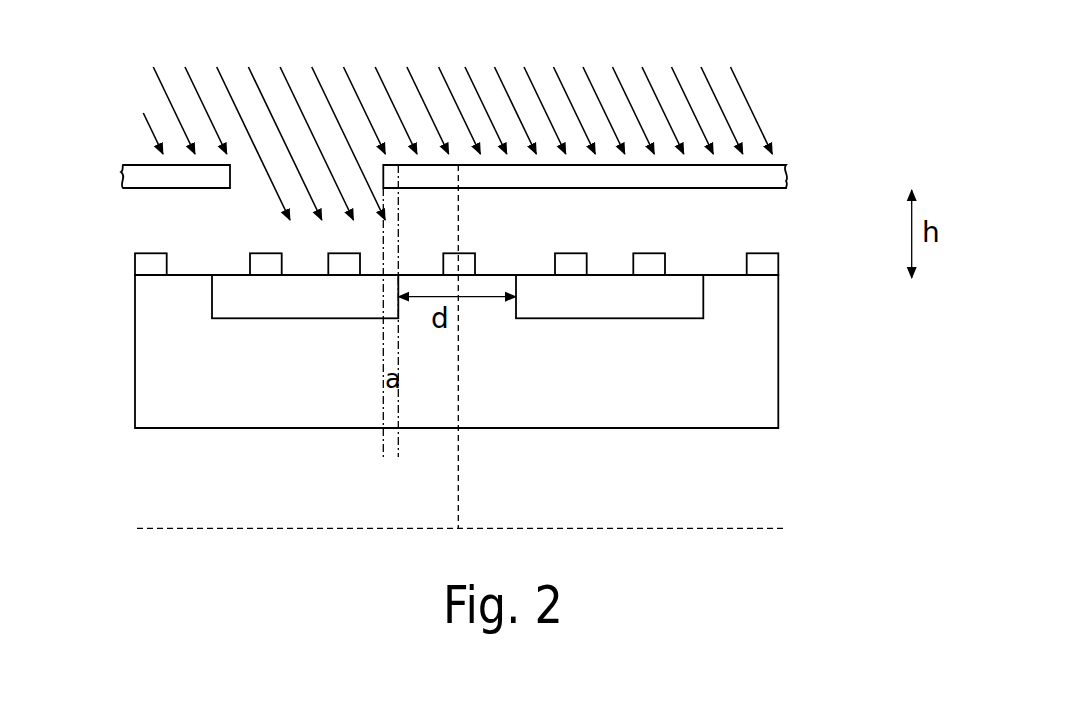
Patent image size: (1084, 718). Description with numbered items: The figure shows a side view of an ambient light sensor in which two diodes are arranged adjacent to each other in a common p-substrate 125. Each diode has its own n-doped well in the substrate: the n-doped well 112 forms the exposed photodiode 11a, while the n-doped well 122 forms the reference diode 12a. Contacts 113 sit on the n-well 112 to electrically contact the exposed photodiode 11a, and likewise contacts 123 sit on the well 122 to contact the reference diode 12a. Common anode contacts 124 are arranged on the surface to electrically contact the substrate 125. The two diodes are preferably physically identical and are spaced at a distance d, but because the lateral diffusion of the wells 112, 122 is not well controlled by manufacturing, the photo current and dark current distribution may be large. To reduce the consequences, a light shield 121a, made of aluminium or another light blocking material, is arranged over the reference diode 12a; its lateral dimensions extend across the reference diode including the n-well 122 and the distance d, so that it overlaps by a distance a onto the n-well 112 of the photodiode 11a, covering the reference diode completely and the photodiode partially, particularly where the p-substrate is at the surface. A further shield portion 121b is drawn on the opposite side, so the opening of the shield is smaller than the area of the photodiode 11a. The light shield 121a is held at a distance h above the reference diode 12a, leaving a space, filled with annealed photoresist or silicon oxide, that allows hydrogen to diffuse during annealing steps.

The exposed photodiode 11a is at (218, 333).
The reference diode 12a is at (702, 345).
The n-doped well 112 is at (302, 318).
The contacts 113 is at (263, 253).
The light shield 121a is at (780, 165).
The light shield portion 121b is at (130, 165).
The n-doped well 122 is at (608, 318).
The contacts 123 is at (565, 253).
The common anode contacts 124 is at (780, 264).
The p-substrate 125 is at (483, 415).